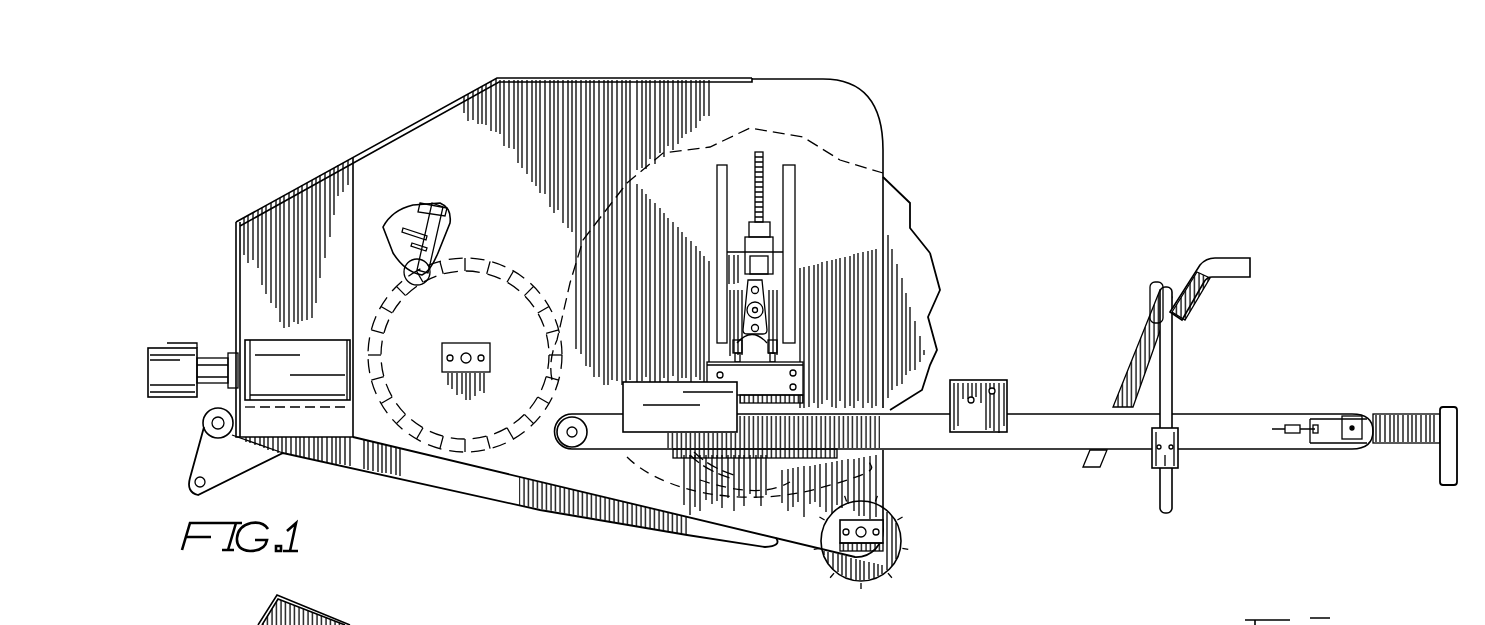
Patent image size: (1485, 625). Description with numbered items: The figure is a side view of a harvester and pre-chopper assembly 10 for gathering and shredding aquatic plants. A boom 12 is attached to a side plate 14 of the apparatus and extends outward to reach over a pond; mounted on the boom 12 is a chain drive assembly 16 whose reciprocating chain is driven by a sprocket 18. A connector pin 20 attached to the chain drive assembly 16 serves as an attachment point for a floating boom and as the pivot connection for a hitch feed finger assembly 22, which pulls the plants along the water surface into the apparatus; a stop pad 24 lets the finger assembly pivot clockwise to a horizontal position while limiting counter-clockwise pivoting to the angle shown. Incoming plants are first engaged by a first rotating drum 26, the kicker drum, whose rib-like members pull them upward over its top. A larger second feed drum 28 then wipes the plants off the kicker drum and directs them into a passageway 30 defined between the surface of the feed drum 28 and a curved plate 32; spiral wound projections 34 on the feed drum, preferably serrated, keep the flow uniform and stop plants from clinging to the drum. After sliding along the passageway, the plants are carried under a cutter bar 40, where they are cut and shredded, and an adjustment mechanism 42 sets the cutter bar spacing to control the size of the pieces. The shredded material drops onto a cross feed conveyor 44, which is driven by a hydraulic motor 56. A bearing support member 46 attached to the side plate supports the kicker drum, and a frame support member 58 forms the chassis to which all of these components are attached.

The harvester and pre-chopper assembly 10 is at (298, 164).
The boom 12 is at (1425, 412).
The side plate 14 is at (823, 78).
The chain drive assembly 16 is at (1355, 412).
The sprocket 18 is at (580, 451).
The connector pin 20 is at (1172, 392).
The hitch feed finger assembly 22 is at (1240, 260).
The stop pad 24 is at (1198, 300).
The first rotating drum 26 is at (898, 549).
The second feed drum 28 is at (918, 254).
The passageway 30 is at (730, 488).
The curved plate 32 is at (910, 204).
The spiral wound projections 34 is at (655, 480).
The cutter bar 40 is at (395, 276).
The adjustment mechanism 42 is at (425, 205).
The cross feed conveyor 44 is at (320, 340).
The bearing support member 46 is at (873, 516).
The hydraulic motor 56 is at (147, 365).
The frame support member 58 is at (578, 510).